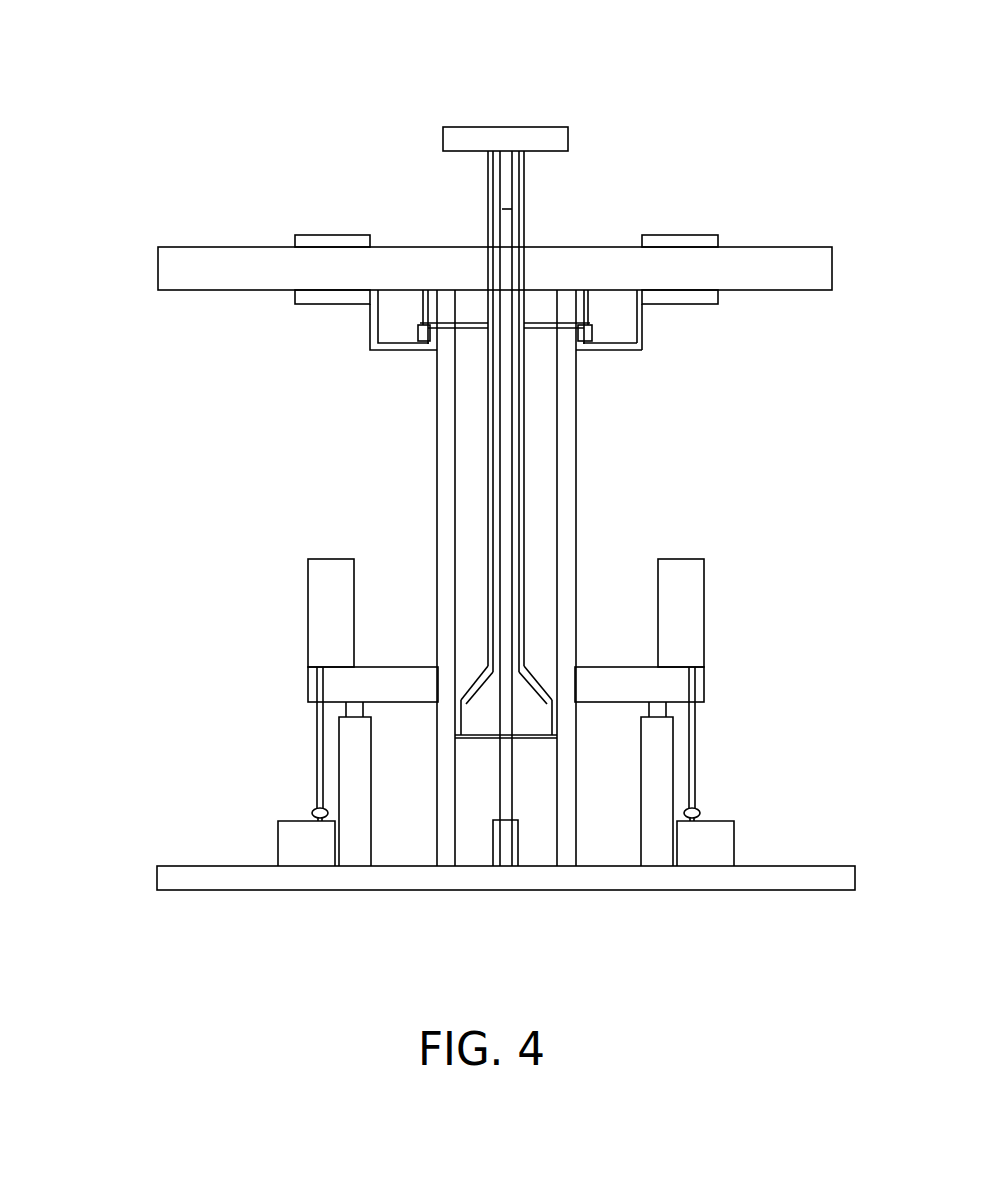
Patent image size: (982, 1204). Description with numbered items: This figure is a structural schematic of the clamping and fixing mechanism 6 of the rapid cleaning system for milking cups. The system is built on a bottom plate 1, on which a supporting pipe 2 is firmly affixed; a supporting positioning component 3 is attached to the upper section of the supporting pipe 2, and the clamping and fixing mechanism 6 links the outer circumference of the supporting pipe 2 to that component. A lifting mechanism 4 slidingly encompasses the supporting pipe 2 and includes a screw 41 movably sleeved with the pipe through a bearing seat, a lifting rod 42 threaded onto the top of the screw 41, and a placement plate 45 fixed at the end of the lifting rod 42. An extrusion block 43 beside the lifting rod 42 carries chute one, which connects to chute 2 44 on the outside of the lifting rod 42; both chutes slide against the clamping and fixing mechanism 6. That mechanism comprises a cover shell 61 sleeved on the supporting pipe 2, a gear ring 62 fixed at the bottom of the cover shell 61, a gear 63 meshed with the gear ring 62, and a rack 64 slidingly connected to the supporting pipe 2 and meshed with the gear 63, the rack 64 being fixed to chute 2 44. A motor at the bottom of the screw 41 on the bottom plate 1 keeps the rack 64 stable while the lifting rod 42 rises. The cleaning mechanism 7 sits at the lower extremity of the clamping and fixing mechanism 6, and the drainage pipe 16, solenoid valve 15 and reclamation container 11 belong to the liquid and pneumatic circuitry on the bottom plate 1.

The bottom plate 1 is at (736, 867).
The reclamation container 11 is at (296, 847).
The solenoid valve 15 is at (313, 813).
The drainage pipe 16 is at (315, 680).
The supporting pipe 2 is at (578, 478).
The supporting positioning component 3 is at (219, 272).
The lifting mechanism 4 is at (529, 192).
The screw 41 is at (499, 790).
The lifting rod 42 is at (520, 597).
The extrusion block 43 is at (462, 700).
The chute 2 44 is at (492, 600).
The placement plate 45 is at (505, 125).
The clamping and fixing mechanism 6 is at (370, 347).
The cover shell 61 is at (643, 322).
The gear ring 62 is at (583, 343).
The gear 63 is at (600, 343).
The rack 64 is at (460, 318).
The cleaning mechanism 7 is at (658, 685).